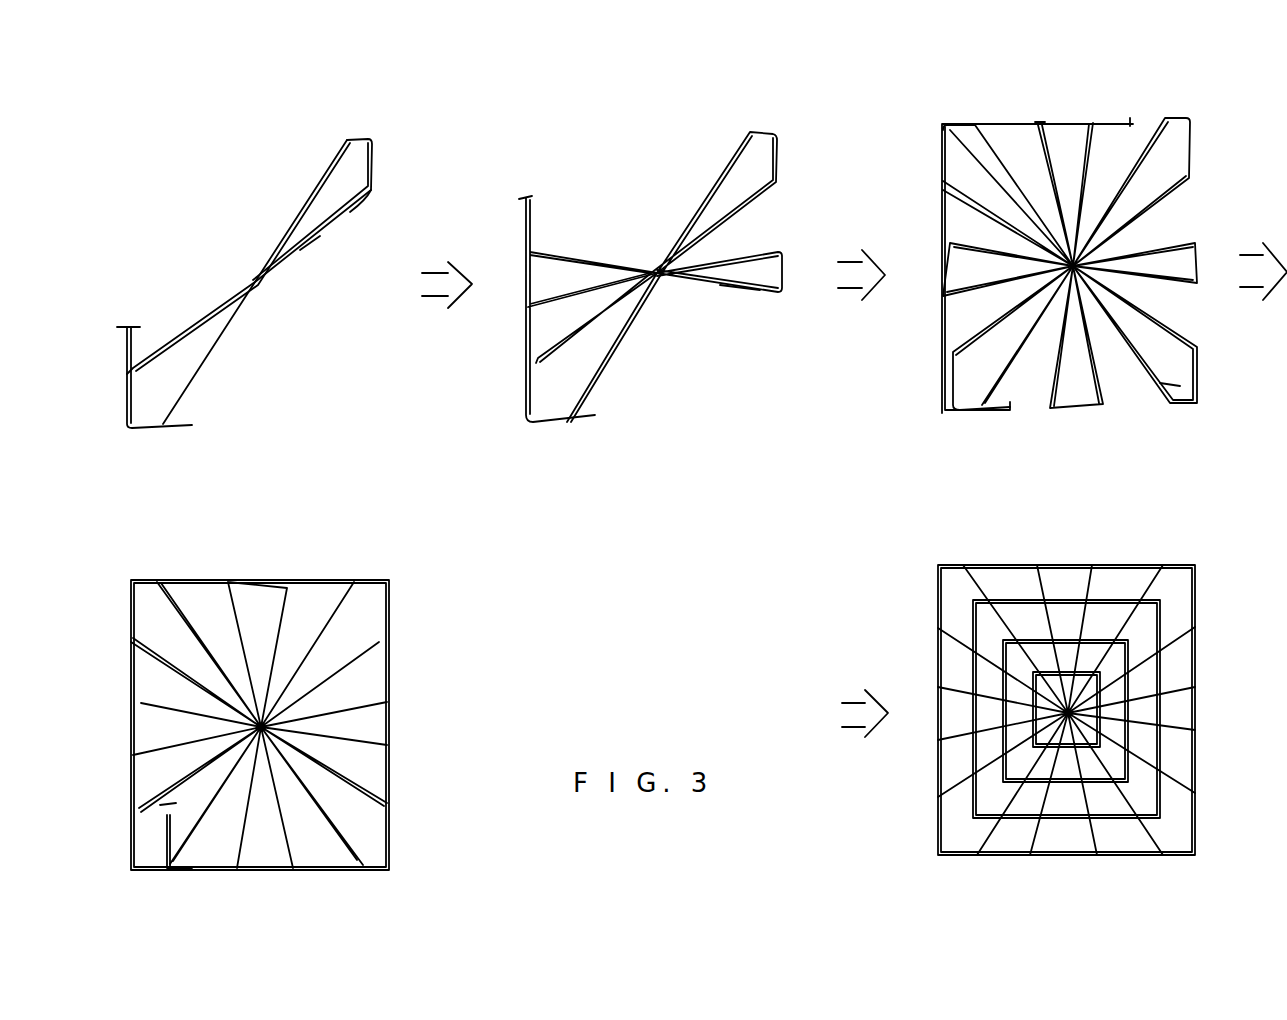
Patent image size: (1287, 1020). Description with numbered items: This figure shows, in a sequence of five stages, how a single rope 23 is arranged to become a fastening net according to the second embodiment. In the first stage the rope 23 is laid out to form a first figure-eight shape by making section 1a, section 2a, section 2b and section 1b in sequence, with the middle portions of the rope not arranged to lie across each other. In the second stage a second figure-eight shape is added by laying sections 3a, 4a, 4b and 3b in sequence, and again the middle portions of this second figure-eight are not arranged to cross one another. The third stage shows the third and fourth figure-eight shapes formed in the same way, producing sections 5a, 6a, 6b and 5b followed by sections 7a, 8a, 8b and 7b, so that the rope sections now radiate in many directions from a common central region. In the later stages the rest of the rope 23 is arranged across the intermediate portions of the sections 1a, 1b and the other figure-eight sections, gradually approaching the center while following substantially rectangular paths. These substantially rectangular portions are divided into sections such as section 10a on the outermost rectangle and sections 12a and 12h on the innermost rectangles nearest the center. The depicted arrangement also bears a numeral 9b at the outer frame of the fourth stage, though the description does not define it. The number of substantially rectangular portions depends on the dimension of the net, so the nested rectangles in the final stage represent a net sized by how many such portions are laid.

The section 1a is at (200, 318).
The section 1b is at (125, 350).
The section 2a is at (310, 193).
The section 2b is at (350, 216).
The rope 23 is at (293, 266).
The section 3a is at (580, 260).
The section 3b is at (580, 297).
The section 4a is at (747, 252).
The section 4b is at (753, 292).
The section 5a is at (1005, 156).
The section 5b is at (967, 190).
The section 6a is at (1183, 334).
The section 6b is at (1160, 385).
The section 7a is at (1140, 187).
The section 7b is at (1060, 168).
The section 8a is at (1103, 377).
The section 8b is at (1068, 370).
The outer frame strip 9b is at (390, 672).
The section 10a is at (167, 822).
The section 12a is at (1030, 760).
The section 12h is at (1040, 800).